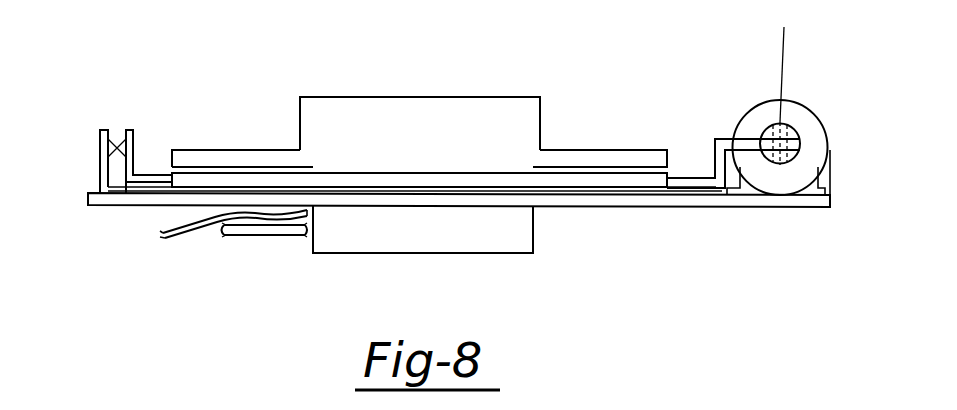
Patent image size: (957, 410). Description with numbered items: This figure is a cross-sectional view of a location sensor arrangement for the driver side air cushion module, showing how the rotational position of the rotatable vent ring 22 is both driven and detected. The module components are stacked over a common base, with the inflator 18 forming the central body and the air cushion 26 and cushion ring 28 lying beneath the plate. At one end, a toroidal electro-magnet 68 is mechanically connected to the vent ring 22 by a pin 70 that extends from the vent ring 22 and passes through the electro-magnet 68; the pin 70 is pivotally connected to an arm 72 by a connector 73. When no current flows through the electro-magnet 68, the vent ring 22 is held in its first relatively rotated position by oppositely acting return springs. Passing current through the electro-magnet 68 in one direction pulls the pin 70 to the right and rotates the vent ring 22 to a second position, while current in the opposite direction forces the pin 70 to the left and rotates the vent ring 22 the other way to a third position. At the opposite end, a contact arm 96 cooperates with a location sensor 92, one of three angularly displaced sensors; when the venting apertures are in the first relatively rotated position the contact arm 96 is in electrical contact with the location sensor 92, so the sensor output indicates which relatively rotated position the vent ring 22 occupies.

The inflator 18 is at (518, 240).
The rotatable vent ring 22 is at (673, 165).
The air cushion 26 is at (192, 226).
The cushion ring 28 is at (270, 236).
The toroidal electro-magnet 68 is at (791, 100).
The pin 70 is at (797, 130).
The arm 72 is at (716, 138).
The connector 73 is at (787, 84).
The location sensor 92 is at (100, 148).
The contact arm 96 is at (134, 143).